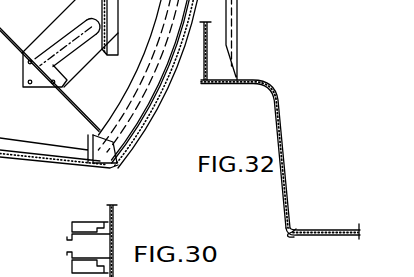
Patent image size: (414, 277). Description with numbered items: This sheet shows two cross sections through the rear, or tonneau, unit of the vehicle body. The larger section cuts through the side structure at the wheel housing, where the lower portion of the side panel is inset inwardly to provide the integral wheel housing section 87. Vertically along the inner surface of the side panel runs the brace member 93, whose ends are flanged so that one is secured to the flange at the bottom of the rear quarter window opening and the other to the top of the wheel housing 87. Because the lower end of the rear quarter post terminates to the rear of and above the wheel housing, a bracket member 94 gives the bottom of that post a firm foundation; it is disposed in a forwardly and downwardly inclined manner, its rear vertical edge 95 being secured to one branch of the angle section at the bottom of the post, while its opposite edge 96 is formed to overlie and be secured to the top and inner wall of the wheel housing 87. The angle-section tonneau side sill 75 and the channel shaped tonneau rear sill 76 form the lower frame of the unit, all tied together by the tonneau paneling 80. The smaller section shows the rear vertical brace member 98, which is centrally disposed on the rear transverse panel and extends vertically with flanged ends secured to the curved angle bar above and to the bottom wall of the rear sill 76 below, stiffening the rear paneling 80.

In FIG. 32, the bracket member 94 is at (67, 33).
In FIG. 32, the rear vertical edge 95 is at (119, 6).
In FIG. 32, the opposite edge 96 is at (40, 75).
In FIG. 32, the brace member 93 is at (240, 21).
In FIG. 32, the wheel housing section 87 is at (280, 130).
In FIG. 32, the tonneau rear sill 76 is at (114, 147).
In FIG. 32, the tonneau side sill 75 is at (295, 221).
In FIG. 30, the tonneau paneling 80 is at (114, 222).
In FIG. 30, the rear vertical brace member 98 is at (93, 244).